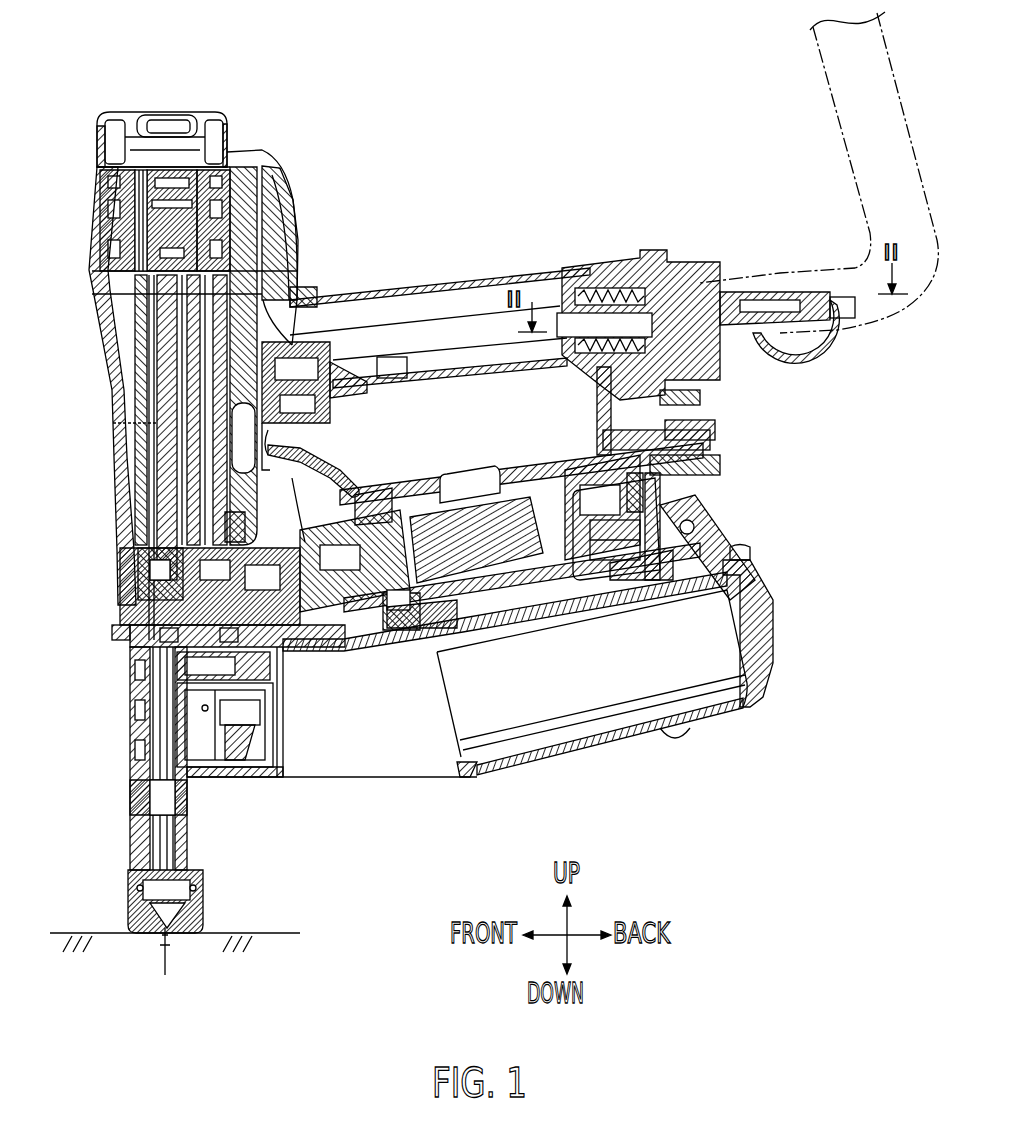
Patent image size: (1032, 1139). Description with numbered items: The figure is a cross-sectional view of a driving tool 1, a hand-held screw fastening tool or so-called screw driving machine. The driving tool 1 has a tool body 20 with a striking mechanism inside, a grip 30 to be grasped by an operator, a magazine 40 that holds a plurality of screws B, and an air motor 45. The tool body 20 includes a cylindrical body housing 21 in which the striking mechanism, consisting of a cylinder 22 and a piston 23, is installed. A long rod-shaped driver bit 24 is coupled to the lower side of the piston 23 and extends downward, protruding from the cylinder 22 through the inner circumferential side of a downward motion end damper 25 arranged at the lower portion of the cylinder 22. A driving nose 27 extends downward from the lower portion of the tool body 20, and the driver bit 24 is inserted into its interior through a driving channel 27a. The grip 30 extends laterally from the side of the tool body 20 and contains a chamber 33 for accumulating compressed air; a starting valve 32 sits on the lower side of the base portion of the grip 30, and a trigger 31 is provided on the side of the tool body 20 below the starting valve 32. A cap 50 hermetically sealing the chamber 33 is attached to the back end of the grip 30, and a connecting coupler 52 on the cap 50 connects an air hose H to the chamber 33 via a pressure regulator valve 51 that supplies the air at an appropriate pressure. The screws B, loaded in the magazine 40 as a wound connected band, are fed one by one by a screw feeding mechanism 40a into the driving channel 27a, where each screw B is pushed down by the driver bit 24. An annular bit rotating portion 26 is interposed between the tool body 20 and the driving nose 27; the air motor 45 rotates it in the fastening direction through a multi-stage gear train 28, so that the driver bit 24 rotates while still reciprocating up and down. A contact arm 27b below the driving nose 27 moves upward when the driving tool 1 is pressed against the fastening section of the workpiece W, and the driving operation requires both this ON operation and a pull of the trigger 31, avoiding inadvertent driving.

The driving tool 1 is at (82, 97).
The tool body 20 is at (99, 455).
The body housing 21 is at (98, 322).
The cylinder 22 is at (146, 500).
The piston 23 is at (163, 190).
The driver bit 24 is at (113, 423).
The downward motion end damper 25 is at (150, 563).
The bit rotating portion 26 is at (122, 622).
The driving nose 27 is at (200, 830).
The driving channel 27a is at (147, 793).
The contact arm 27b is at (132, 918).
The gear train 28 is at (365, 652).
The grip 30 is at (473, 276).
The trigger 31 is at (347, 473).
The starting valve 32 is at (329, 347).
The chamber 33 is at (401, 313).
The magazine 40 is at (763, 696).
The screw feeding mechanism 40a is at (292, 715).
The air motor 45 is at (471, 478).
The cap 50 is at (690, 258).
The pressure regulator valve 51 is at (600, 285).
The connecting coupler 52 is at (783, 288).
The air hose H is at (847, 147).
The workpiece W is at (282, 933).
The screws B is at (160, 955).